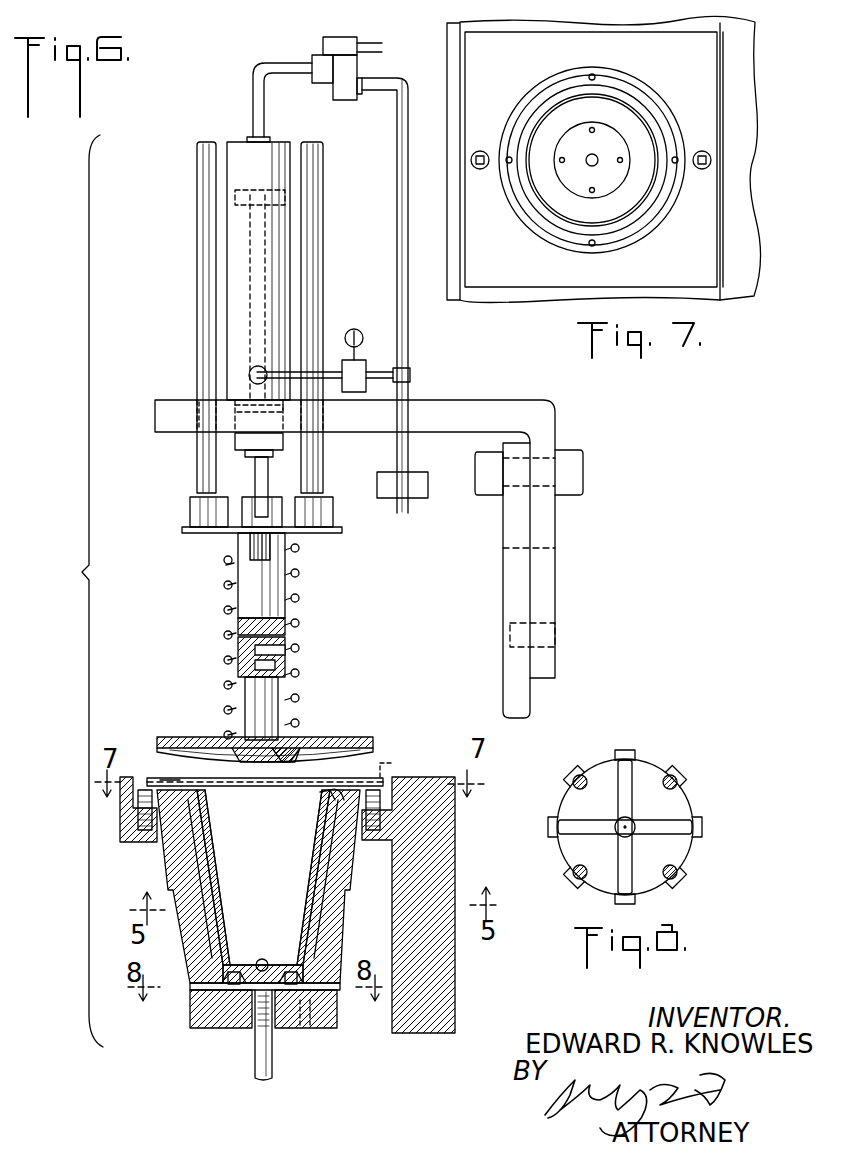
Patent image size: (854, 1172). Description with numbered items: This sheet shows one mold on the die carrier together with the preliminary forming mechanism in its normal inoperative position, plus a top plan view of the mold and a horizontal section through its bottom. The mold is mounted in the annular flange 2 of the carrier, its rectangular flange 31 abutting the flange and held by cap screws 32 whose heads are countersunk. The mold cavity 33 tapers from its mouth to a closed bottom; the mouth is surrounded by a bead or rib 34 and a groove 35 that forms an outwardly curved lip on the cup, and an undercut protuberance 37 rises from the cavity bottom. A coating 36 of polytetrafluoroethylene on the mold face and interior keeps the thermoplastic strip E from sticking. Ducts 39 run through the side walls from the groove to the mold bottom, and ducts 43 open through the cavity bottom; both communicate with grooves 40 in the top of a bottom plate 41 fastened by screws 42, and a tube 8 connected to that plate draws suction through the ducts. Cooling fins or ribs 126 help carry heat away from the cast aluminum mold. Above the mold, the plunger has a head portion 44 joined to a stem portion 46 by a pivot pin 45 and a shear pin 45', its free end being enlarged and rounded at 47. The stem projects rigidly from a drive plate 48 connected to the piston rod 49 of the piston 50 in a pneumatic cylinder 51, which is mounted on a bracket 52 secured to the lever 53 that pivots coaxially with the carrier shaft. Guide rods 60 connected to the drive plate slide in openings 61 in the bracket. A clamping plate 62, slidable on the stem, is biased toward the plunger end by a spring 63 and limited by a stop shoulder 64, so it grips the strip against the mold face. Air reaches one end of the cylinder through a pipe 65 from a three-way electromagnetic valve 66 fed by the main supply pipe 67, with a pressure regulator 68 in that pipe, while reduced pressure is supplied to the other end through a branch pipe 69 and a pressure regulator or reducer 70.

In FIG. 6, the annular flange 2 is at (148, 840).
In FIG. 6, the tube 8 is at (256, 1052).
In FIG. 7, the rectangular flange 31 is at (510, 72).
In FIG. 6, the cap screws 32 is at (388, 775).
In FIG. 7, the cap screws 32 is at (702, 170).
In FIG. 6, the mold cavity 33 is at (212, 904).
In FIG. 7, the mold cavity 33 is at (610, 105).
In FIG. 6, the bead or rib 34 is at (335, 810).
In FIG. 7, the bead or rib 34 is at (656, 114).
In FIG. 6, the groove 35 is at (336, 782).
In FIG. 7, the groove 35 is at (665, 130).
In FIG. 6, the coating 36 is at (206, 830).
In FIG. 6, the undercut protuberance 37 is at (266, 960).
In FIG. 7, the undercut protuberance 37 is at (596, 160).
In FIG. 6, the ducts 39 is at (190, 865).
In FIG. 7, the ducts 39 is at (590, 75).
In FIG. 6, the grooves 40 is at (215, 988).
In FIG. 8, the grooves 40 is at (640, 826).
In FIG. 6, the bottom plate 41 is at (285, 1030).
In FIG. 8, the bottom plate 41 is at (699, 801).
In FIG. 6, the screws 42 is at (315, 1030).
In FIG. 8, the screws 42 is at (678, 870).
In FIG. 6, the ducts 43 is at (236, 968).
In FIG. 7, the ducts 43 is at (592, 192).
In FIG. 6, the head portion 44 is at (255, 695).
In FIG. 6, the pivot pin 45 is at (233, 641).
In FIG. 6, the shear pin 45' is at (290, 649).
In FIG. 6, the stem portion 46 is at (276, 566).
In FIG. 6, the enlarged rounded end 47 is at (292, 750).
In FIG. 6, the drive plate 48 is at (213, 528).
In FIG. 6, the piston rod 49 is at (266, 488).
In FIG. 6, the piston 50 is at (237, 200).
In FIG. 6, the cylinder 51 is at (240, 262).
In FIG. 6, the bracket 52 is at (445, 410).
In FIG. 6, the lever 53 is at (505, 605).
In FIG. 6, the guide rods 60 is at (208, 340).
In FIG. 6, the openings 61 is at (200, 415).
In FIG. 6, the clamping plate 62 is at (378, 780).
In FIG. 6, the spring 63 is at (234, 560).
In FIG. 6, the stop shoulder 64 is at (245, 745).
In FIG. 6, the pipe 65 is at (262, 74).
In FIG. 6, the three-way electromagnetic valve 66 is at (322, 72).
In FIG. 6, the main fluid pressure supply pipe 67 is at (400, 215).
In FIG. 6, the pressure regulator 68 is at (420, 490).
In FIG. 6, the branch pipe 69 is at (370, 373).
In FIG. 6, the pressure regulator or reducer 70 is at (356, 382).
In FIG. 8, the cooling fins or ribs 126 is at (622, 750).
In FIG. 6, the thermoplastic strip E is at (165, 780).